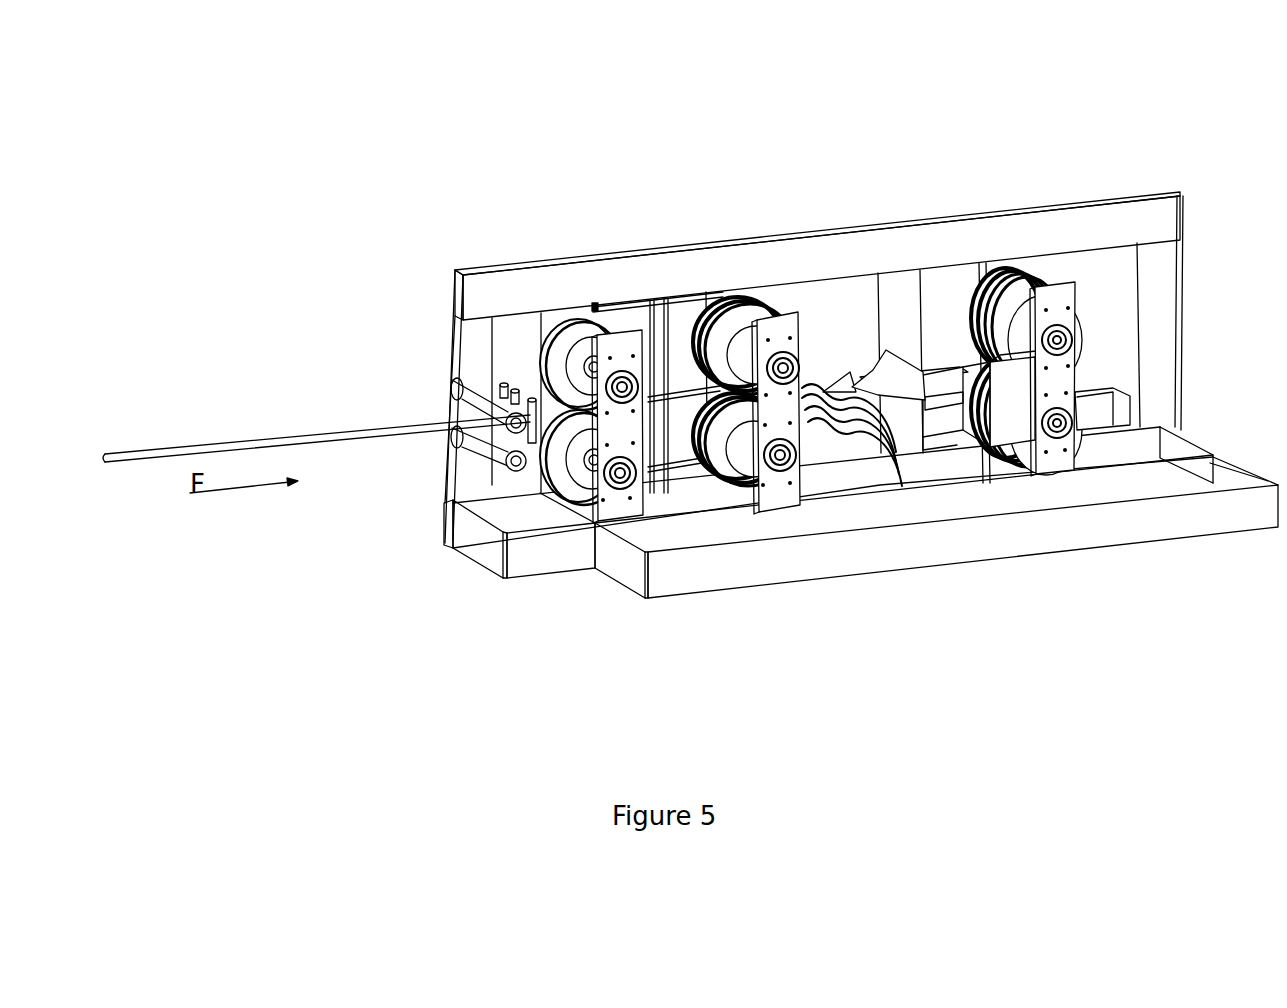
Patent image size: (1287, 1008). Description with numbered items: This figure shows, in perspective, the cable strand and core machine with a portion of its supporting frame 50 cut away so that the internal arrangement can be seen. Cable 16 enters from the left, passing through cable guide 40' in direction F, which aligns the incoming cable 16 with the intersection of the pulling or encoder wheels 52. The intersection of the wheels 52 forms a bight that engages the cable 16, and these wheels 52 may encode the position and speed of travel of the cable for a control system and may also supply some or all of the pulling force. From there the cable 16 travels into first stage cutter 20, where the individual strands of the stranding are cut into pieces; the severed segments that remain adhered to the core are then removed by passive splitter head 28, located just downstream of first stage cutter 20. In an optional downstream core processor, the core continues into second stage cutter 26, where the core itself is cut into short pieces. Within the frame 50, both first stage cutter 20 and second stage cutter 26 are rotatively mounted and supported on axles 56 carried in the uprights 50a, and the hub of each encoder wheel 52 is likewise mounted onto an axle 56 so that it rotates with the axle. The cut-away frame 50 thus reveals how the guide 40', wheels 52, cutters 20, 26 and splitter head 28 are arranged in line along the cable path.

The cable 16 is at (233, 443).
The first stage cutter 20 is at (775, 272).
The second stage cutter 26 is at (1020, 250).
The passive splitter head 28 is at (897, 348).
The cable guide 40' is at (452, 406).
The frame 50 is at (1110, 200).
The uprights 50a is at (643, 338).
The pulling or encoder wheels 52 is at (593, 305).
The axles 56 is at (793, 364).